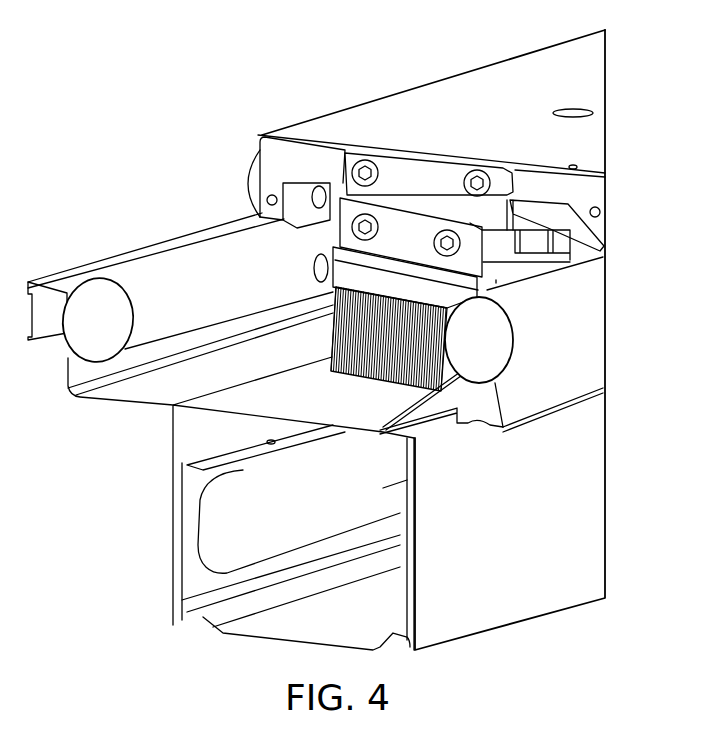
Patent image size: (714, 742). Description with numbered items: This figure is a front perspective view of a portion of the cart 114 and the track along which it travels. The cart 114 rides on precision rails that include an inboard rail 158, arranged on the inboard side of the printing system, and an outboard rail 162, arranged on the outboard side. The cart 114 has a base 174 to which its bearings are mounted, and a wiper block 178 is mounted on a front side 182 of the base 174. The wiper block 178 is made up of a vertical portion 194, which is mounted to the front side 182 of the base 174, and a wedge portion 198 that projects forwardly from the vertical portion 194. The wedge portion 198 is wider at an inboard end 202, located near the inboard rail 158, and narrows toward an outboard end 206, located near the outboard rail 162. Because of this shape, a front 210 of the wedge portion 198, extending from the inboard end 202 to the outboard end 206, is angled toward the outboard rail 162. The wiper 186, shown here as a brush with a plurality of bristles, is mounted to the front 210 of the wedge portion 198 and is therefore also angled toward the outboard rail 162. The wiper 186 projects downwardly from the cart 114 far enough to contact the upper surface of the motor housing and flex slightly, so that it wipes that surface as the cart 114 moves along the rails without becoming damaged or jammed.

The cart 114 is at (588, 63).
The base 174 is at (588, 133).
The front side 182 is at (557, 188).
The wiper block 178 is at (400, 163).
The vertical portion 194 is at (407, 217).
The front 210 is at (370, 290).
The wiper 186 is at (389, 339).
The outboard end 206 is at (425, 292).
The outboard rail 162 is at (135, 277).
The inboard rail 158 is at (498, 338).
The wedge portion 198 is at (527, 210).
The inboard end 202 is at (493, 238).